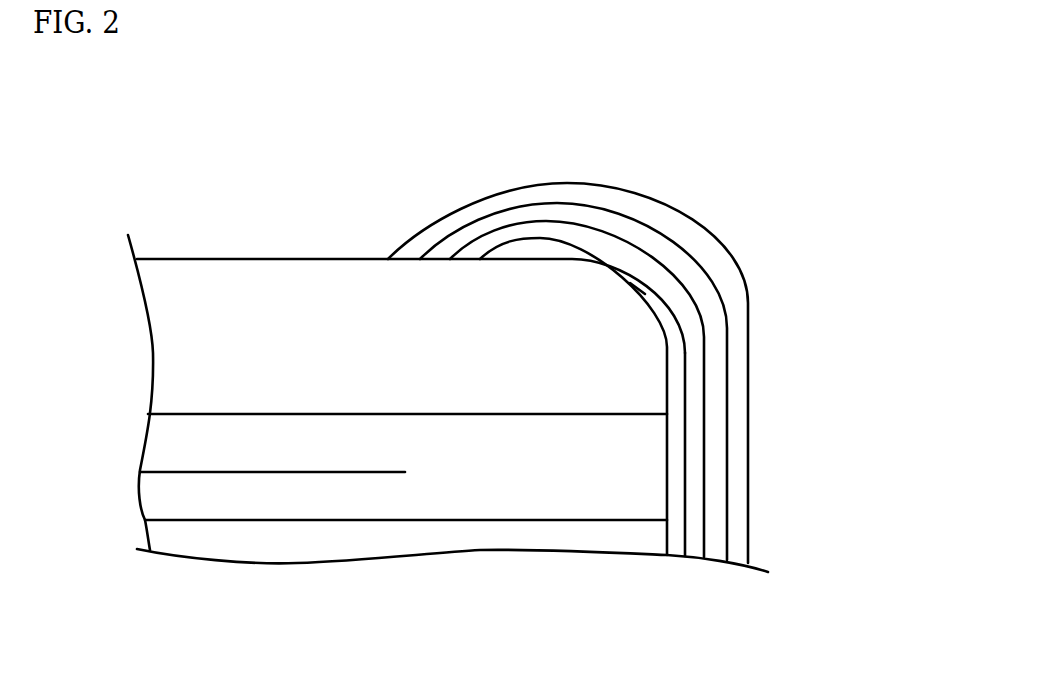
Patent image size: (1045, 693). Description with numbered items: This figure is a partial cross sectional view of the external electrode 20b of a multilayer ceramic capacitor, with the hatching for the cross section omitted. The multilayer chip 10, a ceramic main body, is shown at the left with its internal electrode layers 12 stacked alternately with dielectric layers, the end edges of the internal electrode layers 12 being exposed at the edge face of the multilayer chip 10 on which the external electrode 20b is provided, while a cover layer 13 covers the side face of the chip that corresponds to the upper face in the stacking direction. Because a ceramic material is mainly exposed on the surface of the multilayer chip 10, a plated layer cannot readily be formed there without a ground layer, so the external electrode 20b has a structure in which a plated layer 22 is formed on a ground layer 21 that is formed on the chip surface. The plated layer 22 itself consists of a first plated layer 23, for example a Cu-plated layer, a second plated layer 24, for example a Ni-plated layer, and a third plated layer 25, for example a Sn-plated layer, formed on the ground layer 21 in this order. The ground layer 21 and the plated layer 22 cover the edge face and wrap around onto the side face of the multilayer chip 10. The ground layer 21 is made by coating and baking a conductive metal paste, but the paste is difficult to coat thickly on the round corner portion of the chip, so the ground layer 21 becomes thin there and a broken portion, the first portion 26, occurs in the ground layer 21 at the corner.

The multilayer chip 10 is at (167, 217).
The internal electrode layers 12 is at (237, 473).
The cover layers 13 is at (268, 293).
The external electrode 20b is at (900, 357).
The ground layer 21 is at (677, 450).
The plated layer 22 is at (842, 308).
The first plated layer 23 is at (693, 405).
The second plated layer 24 is at (718, 368).
The third plated layer 25 is at (735, 328).
The first portion 26 is at (642, 287).